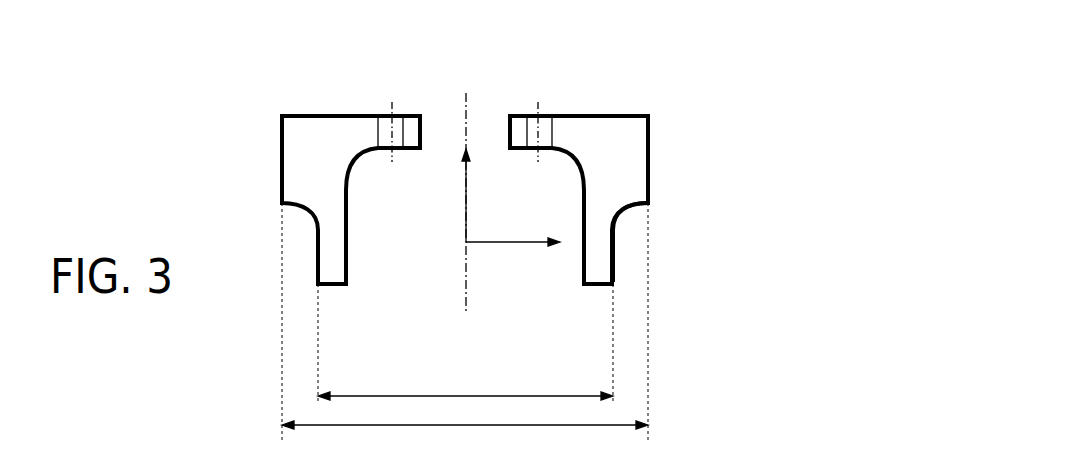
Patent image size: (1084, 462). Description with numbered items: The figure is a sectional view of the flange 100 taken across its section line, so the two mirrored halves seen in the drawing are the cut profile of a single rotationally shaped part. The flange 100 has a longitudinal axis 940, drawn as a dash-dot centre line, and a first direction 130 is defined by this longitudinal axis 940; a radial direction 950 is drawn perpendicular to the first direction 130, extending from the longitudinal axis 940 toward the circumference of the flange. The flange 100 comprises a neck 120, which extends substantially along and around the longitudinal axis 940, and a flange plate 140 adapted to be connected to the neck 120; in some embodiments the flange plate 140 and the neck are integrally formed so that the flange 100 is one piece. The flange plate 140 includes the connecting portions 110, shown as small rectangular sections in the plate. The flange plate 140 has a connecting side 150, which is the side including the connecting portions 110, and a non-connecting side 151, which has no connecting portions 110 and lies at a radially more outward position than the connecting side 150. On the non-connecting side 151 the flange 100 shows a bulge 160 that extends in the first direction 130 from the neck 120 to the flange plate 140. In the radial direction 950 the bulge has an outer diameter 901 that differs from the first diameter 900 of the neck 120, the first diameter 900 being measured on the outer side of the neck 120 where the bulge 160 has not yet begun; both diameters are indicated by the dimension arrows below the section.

The flange 100 is at (680, 117).
The connecting portions 110 is at (385, 115).
The neck 120 is at (598, 265).
The first direction 130 is at (462, 208).
The flange plate 140 is at (578, 133).
The connecting side 150 is at (440, 134).
The non-connecting side 151 is at (268, 172).
The bulge 160 is at (290, 192).
The first diameter 900 is at (573, 390).
The outer diameter 901 is at (582, 423).
The longitudinal axis 940 is at (464, 298).
The radial direction 950 is at (500, 242).